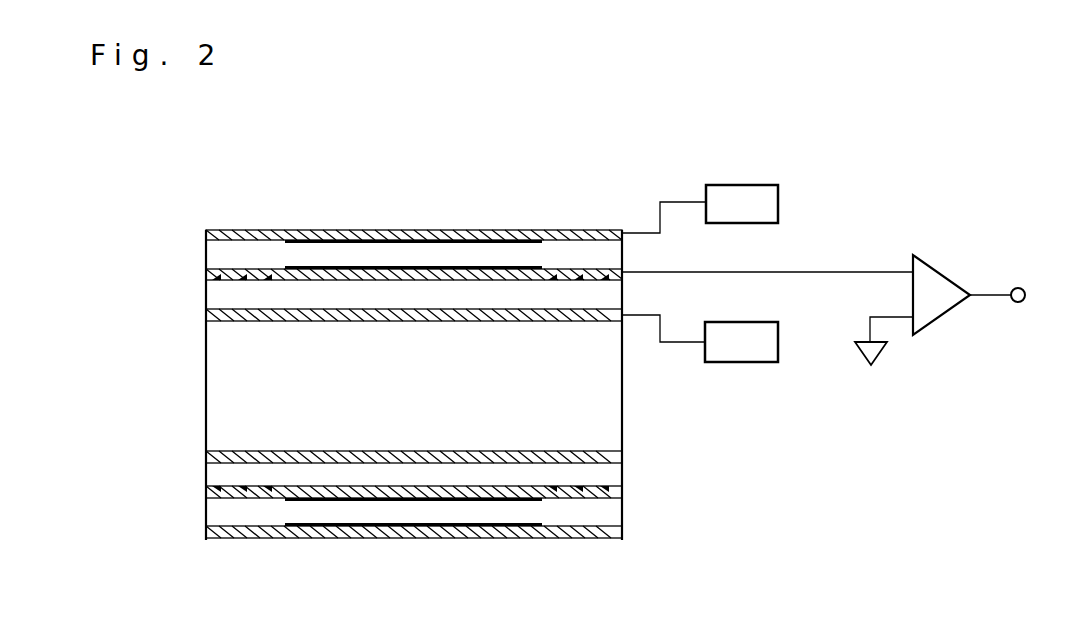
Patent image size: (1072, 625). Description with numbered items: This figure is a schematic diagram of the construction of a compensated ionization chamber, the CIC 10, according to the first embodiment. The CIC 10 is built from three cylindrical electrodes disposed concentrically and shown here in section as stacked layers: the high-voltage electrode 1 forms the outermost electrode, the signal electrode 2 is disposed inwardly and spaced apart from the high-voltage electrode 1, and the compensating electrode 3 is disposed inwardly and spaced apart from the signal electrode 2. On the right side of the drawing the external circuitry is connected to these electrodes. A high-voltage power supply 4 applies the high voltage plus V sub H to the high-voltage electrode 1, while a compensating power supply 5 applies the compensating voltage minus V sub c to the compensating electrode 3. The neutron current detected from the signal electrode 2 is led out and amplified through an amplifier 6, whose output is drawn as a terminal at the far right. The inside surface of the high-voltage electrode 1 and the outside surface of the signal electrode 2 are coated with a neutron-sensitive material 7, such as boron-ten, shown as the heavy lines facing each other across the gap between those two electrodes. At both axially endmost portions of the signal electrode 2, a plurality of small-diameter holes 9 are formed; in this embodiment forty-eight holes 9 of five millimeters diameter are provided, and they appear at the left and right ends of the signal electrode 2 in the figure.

The high-voltage electrode 1 is at (206, 233).
The signal electrode 2 is at (206, 273).
The compensating electrode 3 is at (206, 316).
The high-voltage power supply 4 is at (762, 185).
The compensating power supply 5 is at (745, 363).
The amplifier 6 is at (937, 270).
The neutron-sensitive material 7 is at (332, 268).
The small-diameter holes 9 is at (264, 272).
The CIC 10 is at (478, 226).